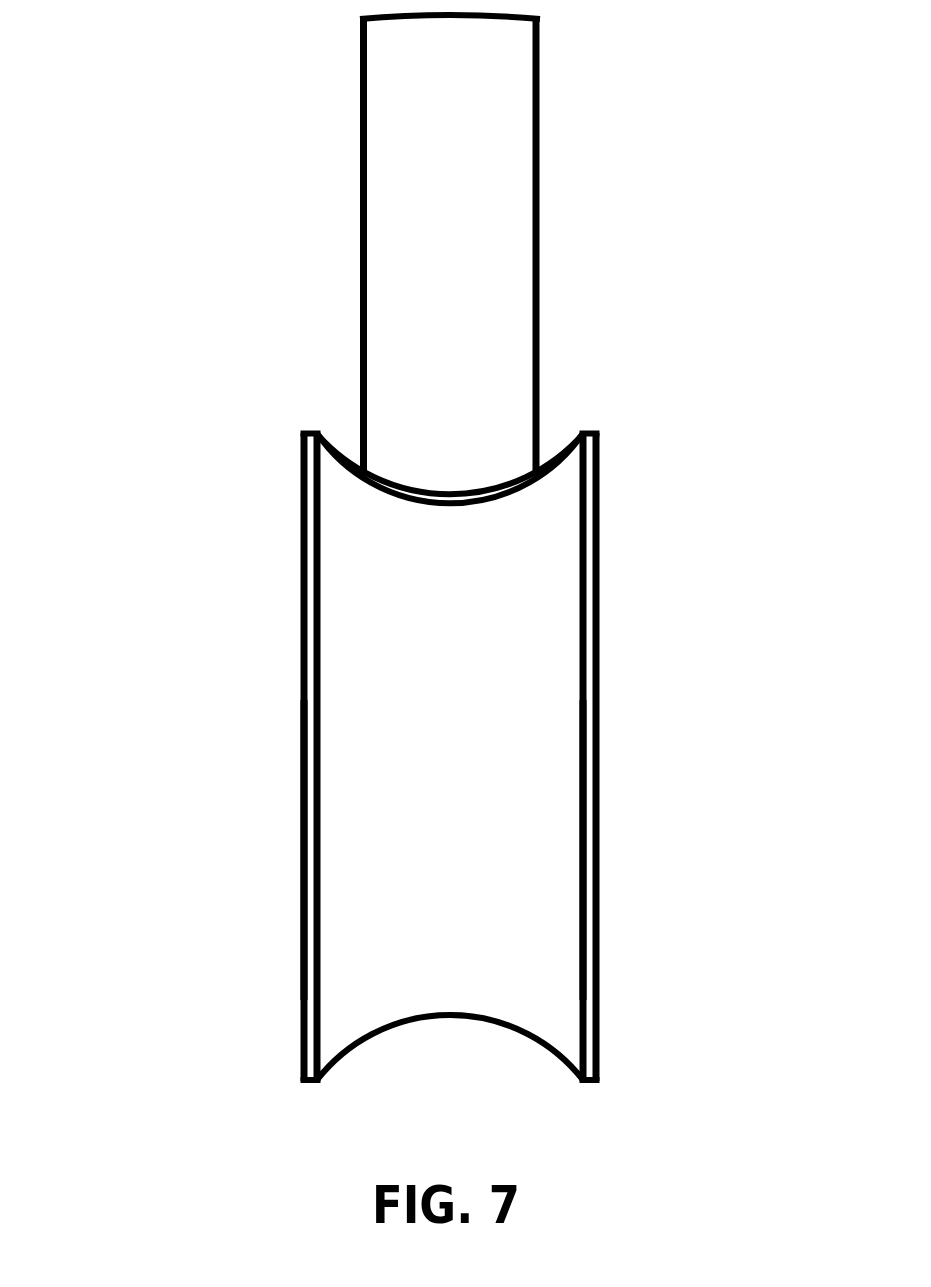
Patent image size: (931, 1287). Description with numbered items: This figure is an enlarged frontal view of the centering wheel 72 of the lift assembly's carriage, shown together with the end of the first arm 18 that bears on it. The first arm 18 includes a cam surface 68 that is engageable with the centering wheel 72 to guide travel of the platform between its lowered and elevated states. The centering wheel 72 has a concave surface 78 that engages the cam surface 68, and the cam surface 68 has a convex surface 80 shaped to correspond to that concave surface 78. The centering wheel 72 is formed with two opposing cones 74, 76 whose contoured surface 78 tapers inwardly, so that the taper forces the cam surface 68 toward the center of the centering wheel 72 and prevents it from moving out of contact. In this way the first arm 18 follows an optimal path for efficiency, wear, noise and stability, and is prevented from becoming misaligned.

The first arm 18 is at (437, 202).
The cam surface 68 is at (465, 290).
The centering wheel 72 is at (632, 752).
The cone 74 is at (335, 900).
The cone 76 is at (530, 907).
The concave surface 78 is at (549, 460).
The convex surface 80 is at (437, 503).